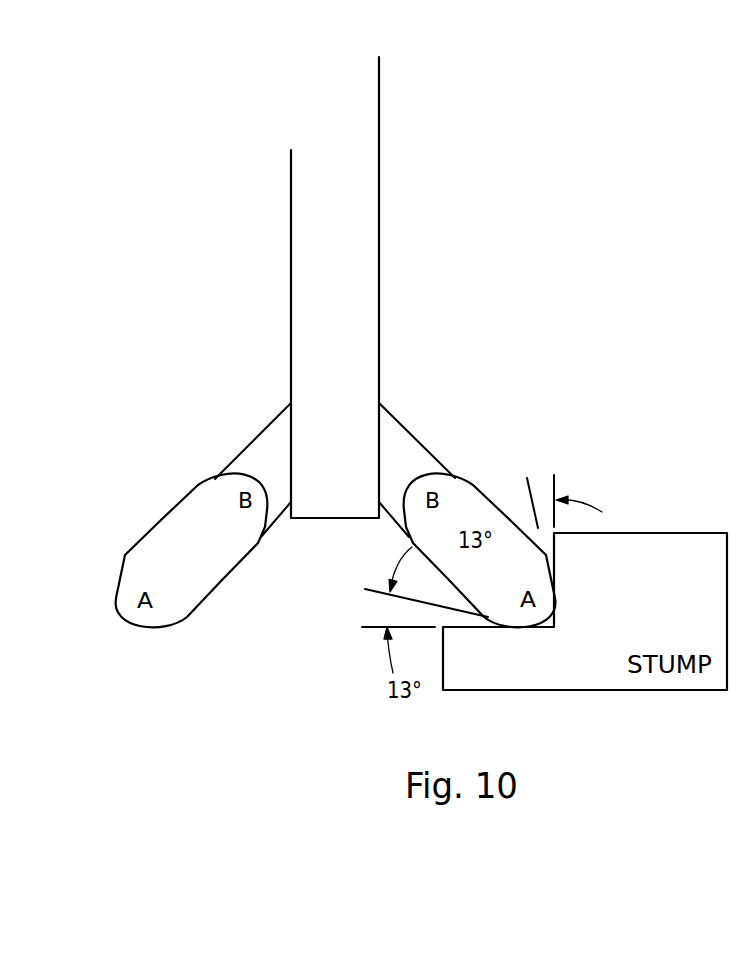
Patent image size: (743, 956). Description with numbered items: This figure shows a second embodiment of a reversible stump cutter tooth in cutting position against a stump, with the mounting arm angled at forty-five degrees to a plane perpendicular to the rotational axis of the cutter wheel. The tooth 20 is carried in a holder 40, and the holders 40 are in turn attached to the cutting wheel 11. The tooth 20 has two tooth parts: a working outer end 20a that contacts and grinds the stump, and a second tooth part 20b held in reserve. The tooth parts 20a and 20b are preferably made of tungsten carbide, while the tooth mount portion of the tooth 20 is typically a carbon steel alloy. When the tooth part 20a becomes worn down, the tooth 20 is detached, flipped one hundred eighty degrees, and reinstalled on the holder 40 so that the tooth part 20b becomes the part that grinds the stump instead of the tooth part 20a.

The cutting wheel 11 is at (362, 214).
The holder 40 is at (402, 457).
The tooth 20 is at (416, 542).
The tooth part 20b is at (217, 497).
The working outer end 20a is at (167, 607).